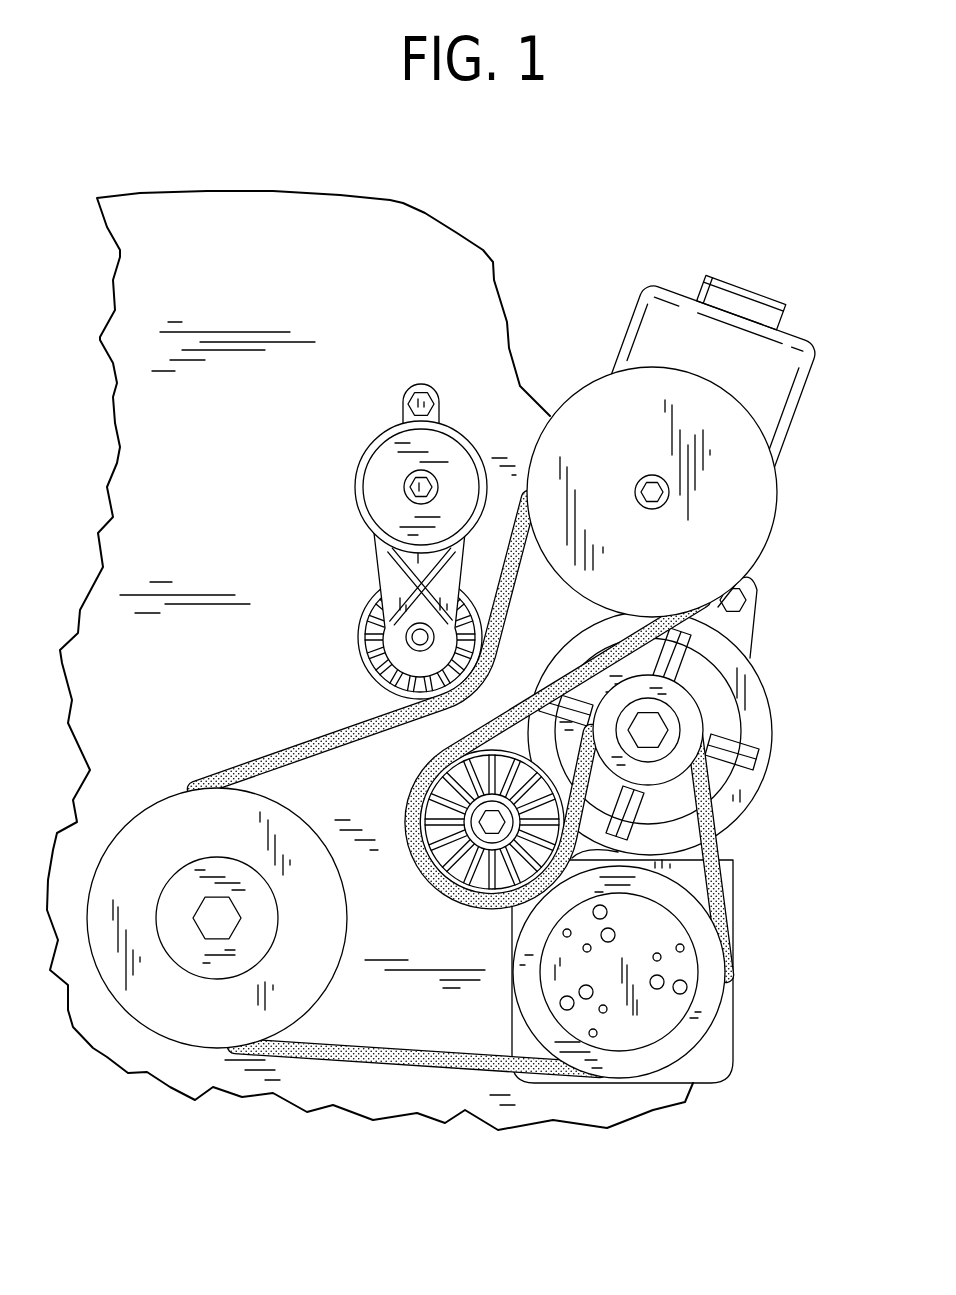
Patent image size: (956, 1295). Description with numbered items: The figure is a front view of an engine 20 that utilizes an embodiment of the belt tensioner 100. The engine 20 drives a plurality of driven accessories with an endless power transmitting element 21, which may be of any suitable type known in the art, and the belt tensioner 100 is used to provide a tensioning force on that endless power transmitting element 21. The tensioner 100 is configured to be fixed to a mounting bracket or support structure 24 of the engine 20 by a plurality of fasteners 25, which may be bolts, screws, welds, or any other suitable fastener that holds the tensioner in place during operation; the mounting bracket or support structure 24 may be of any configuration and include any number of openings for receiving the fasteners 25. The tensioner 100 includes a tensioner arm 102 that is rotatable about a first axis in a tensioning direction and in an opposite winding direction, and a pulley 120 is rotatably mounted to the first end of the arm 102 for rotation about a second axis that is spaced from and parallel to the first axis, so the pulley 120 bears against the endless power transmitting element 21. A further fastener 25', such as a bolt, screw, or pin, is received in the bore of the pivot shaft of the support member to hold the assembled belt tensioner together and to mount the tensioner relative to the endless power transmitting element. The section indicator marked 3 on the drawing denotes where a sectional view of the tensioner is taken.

The engine 20 is at (492, 218).
The mounting bracket or support structure 24 is at (493, 279).
The endless power transmitting element 21 is at (314, 745).
The belt tensioner 100 is at (343, 529).
The tensioner arm 102 is at (454, 567).
The pulley 120 is at (363, 634).
The fasteners 25 is at (393, 394).
The fastener 25' is at (459, 454).
The section view indicator 3 is at (448, 343).